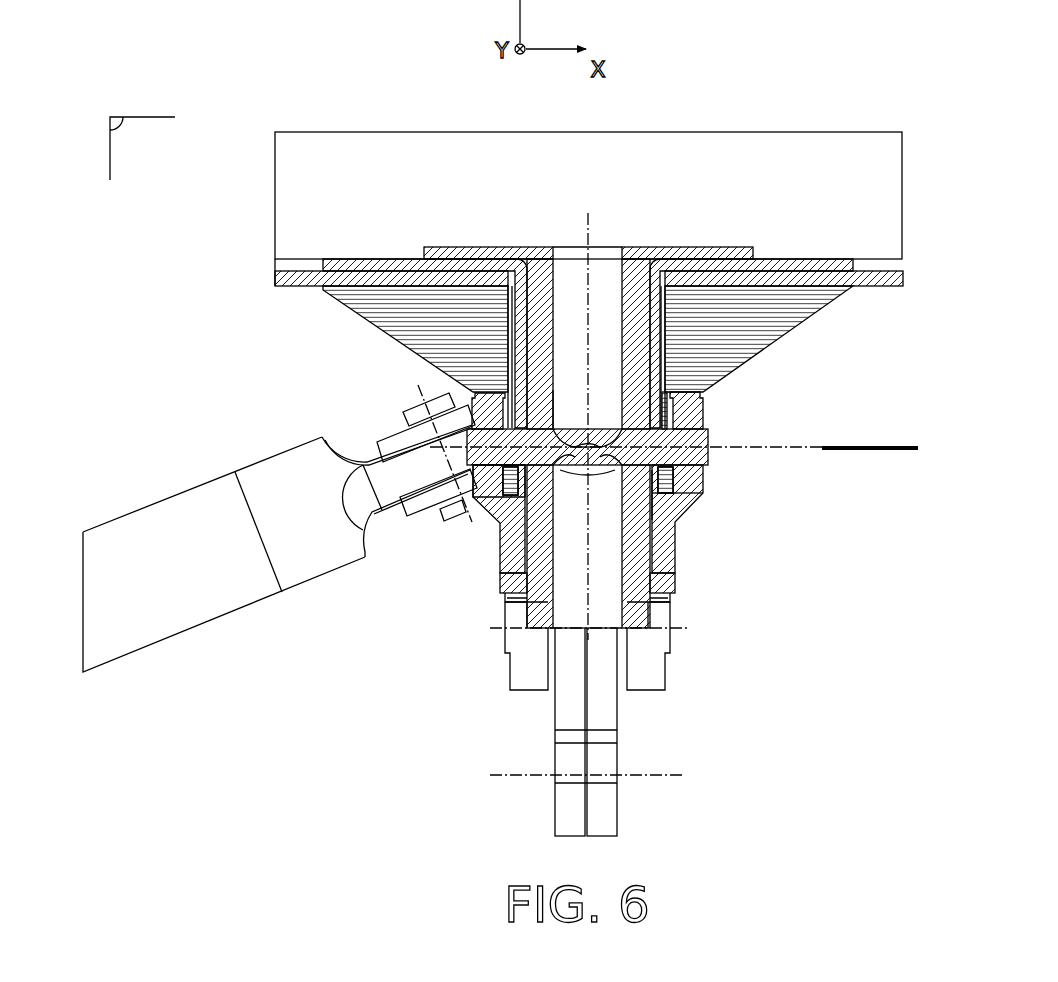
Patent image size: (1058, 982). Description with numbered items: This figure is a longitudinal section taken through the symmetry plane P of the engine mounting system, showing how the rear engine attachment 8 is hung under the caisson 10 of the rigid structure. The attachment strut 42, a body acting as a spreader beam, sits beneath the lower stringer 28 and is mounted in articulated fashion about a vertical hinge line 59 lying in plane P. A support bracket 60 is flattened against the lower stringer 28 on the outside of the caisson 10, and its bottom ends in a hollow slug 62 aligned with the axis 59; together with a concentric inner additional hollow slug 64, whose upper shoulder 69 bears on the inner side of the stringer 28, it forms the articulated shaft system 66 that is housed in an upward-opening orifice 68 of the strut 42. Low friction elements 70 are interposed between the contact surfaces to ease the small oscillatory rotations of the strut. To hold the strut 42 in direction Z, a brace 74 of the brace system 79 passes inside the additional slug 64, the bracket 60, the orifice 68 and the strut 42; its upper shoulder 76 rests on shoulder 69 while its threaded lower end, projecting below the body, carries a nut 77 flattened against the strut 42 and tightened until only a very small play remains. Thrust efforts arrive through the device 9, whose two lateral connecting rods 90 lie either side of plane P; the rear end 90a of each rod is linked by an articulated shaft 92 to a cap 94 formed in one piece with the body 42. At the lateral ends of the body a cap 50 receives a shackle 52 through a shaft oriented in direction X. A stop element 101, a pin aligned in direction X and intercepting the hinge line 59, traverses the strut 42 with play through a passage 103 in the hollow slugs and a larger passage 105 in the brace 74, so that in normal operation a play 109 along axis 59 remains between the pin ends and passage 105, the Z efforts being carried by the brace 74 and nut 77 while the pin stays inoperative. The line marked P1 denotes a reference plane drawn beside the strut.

The rear engine attachment 8 is at (850, 126).
The device 9 is at (280, 521).
The caisson 10 is at (268, 224).
The lower stringer 28 is at (283, 277).
The attachment strut 42 is at (682, 559).
The cap 50 is at (663, 676).
The shackle 52 is at (610, 720).
The hinge line 59 is at (600, 214).
The support bracket 60 is at (548, 339).
The hollow slug 62 is at (657, 493).
The additional hollow slug 64 is at (660, 497).
The articulated shaft system 66 is at (763, 492).
The orifice 68 is at (700, 393).
The shoulder 69 is at (362, 258).
The low friction elements 70 is at (488, 392).
The brace 74 is at (591, 339).
The shoulder 76 is at (452, 248).
The nut 77 is at (673, 596).
The brace system 79 is at (591, 339).
The lateral connecting rods 90 is at (147, 517).
The rear end 90a is at (278, 465).
The articulated shaft 92 is at (410, 413).
The cap 94 is at (390, 442).
The stop element 101 is at (708, 450).
The passage 103 is at (532, 432).
The passage 105 is at (565, 432).
The play 109 is at (637, 466).
The symmetry plane P is at (123, 128).
The reference plane P1 is at (862, 447).